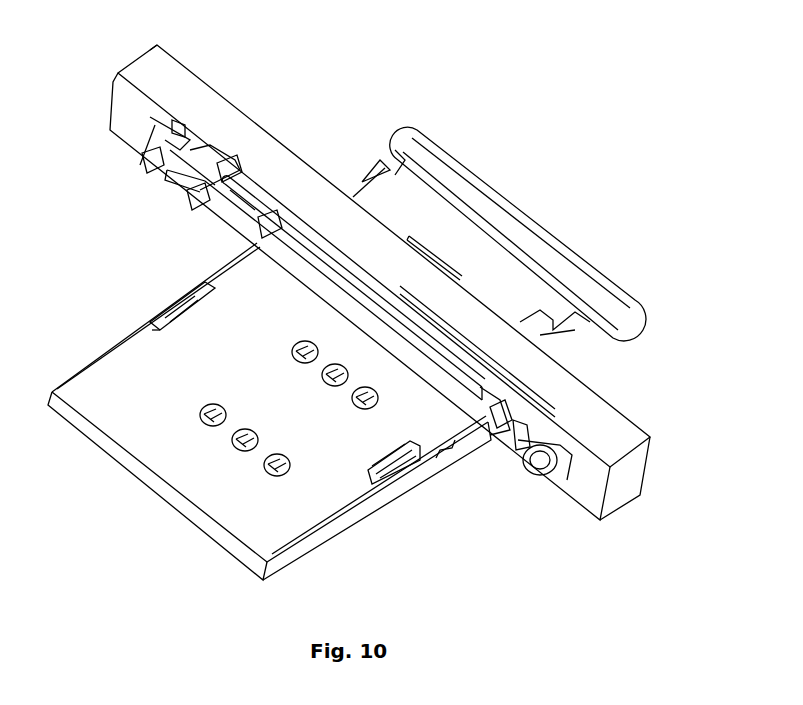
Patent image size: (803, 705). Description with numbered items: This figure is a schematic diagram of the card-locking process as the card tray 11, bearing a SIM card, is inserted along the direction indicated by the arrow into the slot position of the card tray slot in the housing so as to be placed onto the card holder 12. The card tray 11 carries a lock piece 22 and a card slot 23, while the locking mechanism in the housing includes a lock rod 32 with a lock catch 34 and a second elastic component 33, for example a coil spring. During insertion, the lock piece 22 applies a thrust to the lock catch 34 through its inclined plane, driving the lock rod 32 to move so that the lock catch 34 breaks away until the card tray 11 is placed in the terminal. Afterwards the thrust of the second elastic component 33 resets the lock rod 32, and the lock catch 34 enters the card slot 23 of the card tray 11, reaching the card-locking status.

The card tray 11 is at (418, 157).
The card holder 12 is at (88, 387).
The lock piece 22 is at (545, 310).
The card slot 23 is at (576, 312).
The lock rod 32 is at (166, 138).
The second elastic component 33 is at (545, 470).
The lock catch 34 is at (480, 377).